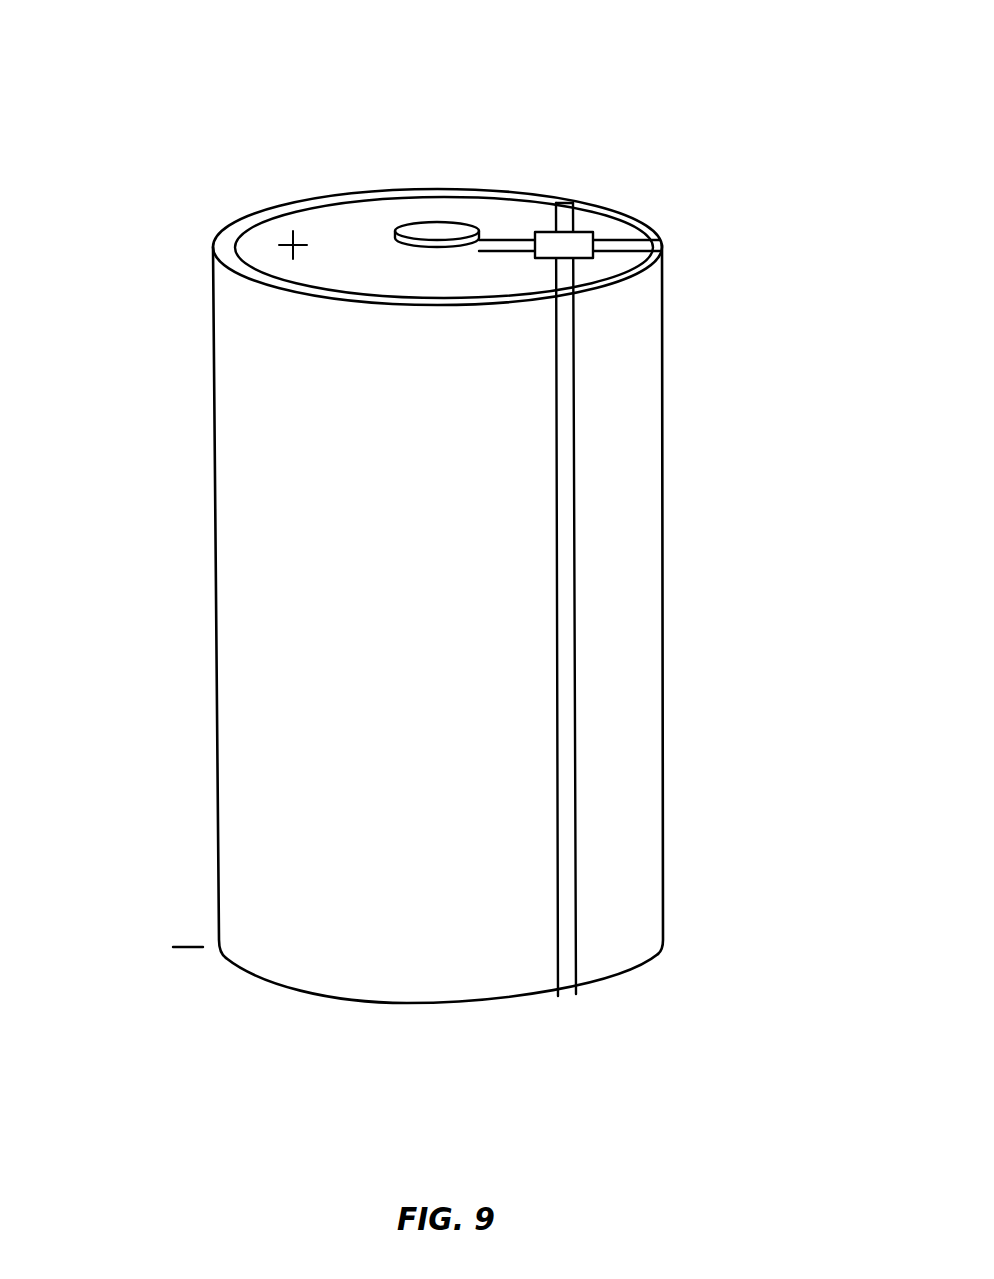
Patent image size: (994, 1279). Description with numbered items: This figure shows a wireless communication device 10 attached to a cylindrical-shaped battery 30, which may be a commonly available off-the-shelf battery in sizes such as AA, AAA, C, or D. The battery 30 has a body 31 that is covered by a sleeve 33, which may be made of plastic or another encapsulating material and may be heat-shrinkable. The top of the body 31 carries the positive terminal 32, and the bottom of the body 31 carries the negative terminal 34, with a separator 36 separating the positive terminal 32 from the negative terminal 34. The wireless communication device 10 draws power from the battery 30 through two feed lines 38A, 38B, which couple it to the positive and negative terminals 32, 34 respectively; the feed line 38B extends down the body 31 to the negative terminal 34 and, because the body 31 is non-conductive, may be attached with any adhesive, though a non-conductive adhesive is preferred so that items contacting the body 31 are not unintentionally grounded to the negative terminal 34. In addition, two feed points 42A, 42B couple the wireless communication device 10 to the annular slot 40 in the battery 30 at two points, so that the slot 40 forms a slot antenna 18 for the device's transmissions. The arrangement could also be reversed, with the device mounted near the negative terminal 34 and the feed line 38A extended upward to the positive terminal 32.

The wireless communication device 10 is at (580, 242).
The slot antenna 18 is at (207, 268).
The battery 30 is at (210, 153).
The body 31 is at (665, 503).
The positive terminal 32 is at (430, 232).
The sleeve 33 is at (230, 237).
The negative terminal 34 is at (563, 990).
The separator 36 is at (598, 648).
The feed line 38A is at (512, 243).
The feed line 38B is at (563, 415).
The slot 40 is at (662, 262).
The feed point 42A is at (565, 205).
The feed point 42B is at (657, 237).